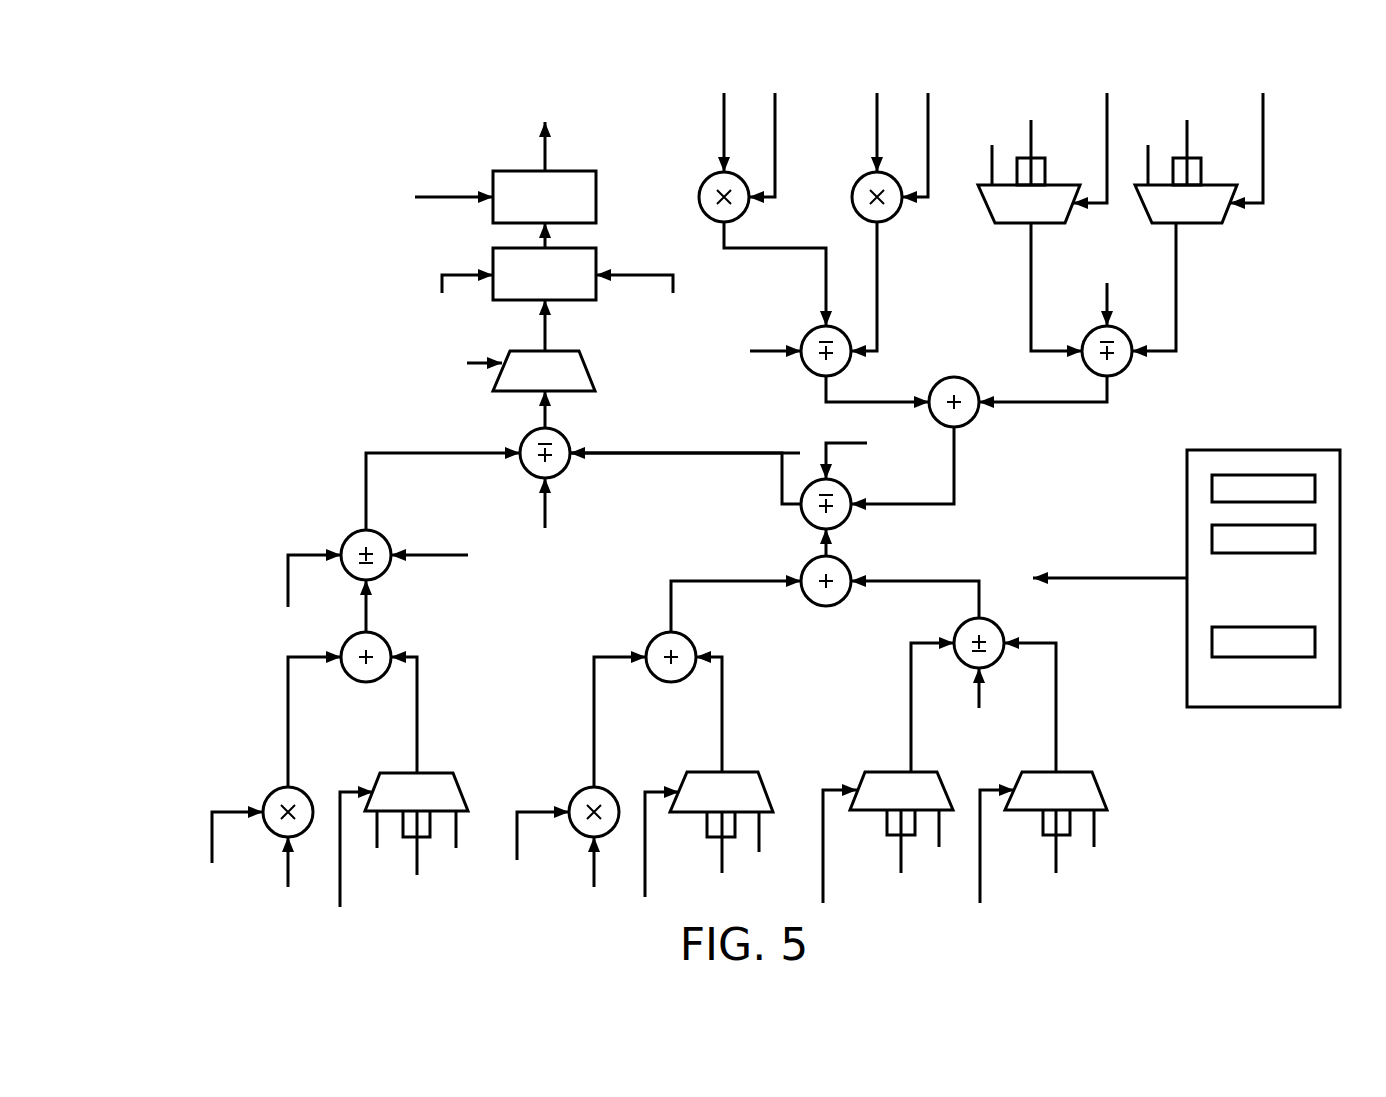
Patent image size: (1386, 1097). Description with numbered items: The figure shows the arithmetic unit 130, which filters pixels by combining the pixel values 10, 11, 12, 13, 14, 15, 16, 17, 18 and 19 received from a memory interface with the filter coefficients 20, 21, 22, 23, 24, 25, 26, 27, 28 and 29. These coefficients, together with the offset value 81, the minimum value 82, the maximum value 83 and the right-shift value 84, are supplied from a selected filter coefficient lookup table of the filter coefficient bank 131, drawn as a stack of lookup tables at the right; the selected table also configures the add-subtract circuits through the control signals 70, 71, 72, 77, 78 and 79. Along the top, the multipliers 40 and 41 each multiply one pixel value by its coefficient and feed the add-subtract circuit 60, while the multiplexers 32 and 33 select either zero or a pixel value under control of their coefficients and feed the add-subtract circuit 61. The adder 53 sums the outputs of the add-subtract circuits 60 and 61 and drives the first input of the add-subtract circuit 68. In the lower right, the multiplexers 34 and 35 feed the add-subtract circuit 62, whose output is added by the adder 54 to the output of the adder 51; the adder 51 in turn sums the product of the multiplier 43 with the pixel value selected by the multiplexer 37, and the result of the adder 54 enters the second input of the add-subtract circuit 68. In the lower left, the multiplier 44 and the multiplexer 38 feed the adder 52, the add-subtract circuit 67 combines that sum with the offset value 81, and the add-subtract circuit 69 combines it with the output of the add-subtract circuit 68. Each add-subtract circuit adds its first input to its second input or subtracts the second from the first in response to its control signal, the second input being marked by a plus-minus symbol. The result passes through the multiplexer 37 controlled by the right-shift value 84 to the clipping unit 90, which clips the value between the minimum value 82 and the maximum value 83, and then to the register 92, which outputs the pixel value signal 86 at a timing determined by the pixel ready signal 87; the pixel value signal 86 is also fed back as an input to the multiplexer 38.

The pixel value V0 10 is at (723, 121).
The pixel value V1 11 is at (876, 121).
The pixel value V2 12 is at (1186, 140).
The pixel value V3 13 is at (1030, 140).
The pixel value V4 14 is at (1056, 853).
The pixel value V5 15 is at (900, 853).
The pixel value V6 16 is at (594, 874).
The pixel value V7 17 is at (721, 855).
The pixel value V8 18 is at (416, 856).
The pixel value V9 19 is at (289, 874).
The filter coefficient CF0 20 is at (785, 133).
The filter coefficient CF1 21 is at (938, 135).
The filter coefficient CF2 22 is at (1261, 136).
The filter coefficient CF3 23 is at (1105, 136).
The filter coefficient CF4 24 is at (982, 857).
The filter coefficient CF5 25 is at (827, 857).
The filter coefficient CF6 26 is at (525, 849).
The filter coefficient CF7 27 is at (658, 858).
The filter coefficient CF8 28 is at (353, 859).
The filter coefficient CF9 29 is at (219, 850).
The multiplexer MUX2 32 is at (1184, 237).
The multiplexer MUX3 33 is at (1030, 237).
The multiplexer MUX4 34 is at (1055, 757).
The multiplexer MUX5 35 is at (902, 757).
The multiplexer MUX7 37 is at (633, 586).
The multiplexer MUX8 38 is at (416, 764).
The multiplier M0 40 is at (700, 196).
The multiplier M1 41 is at (852, 197).
The multiplier M3 43 is at (570, 798).
The multiplier M4 44 is at (263, 798).
The adder A1 51 is at (672, 682).
The adder A2 52 is at (367, 682).
The adder A3 53 is at (967, 378).
The adder A4 54 is at (827, 606).
The add-subtract circuit AS0 60 is at (812, 327).
The add-subtract circuit AS1 61 is at (1127, 371).
The add-subtract circuit AS2 62 is at (962, 625).
The add-subtract circuit AS7 67 is at (385, 573).
The add-subtract circuit AS8 68 is at (843, 527).
The add-subtract circuit AS9 69 is at (570, 470).
The add-subtract control signal AS0C 70 is at (757, 362).
The add-subtract control signal AS1C 71 is at (1107, 293).
The add-subtract control signal AS2C 72 is at (979, 701).
The add-subtract control signal AS7C 77 is at (429, 536).
The add-subtract control signal AS8C 78 is at (865, 447).
The add-subtract control signal AS9C 79 is at (552, 517).
The OFFSET coefficient 81 is at (282, 593).
The MIN coefficient 82 is at (452, 297).
The MAX coefficient 83 is at (641, 297).
The RSFT coefficient 84 is at (459, 374).
The pixel value signal P_VAL 86 is at (467, 483).
The pixel ready signal P_RDY 87 is at (399, 197).
The clipping unit 90 is at (544, 261).
The register REG 92 is at (544, 197).
The arithmetic unit 130 is at (427, 954).
The filter coefficient bank 131 is at (1186, 578).